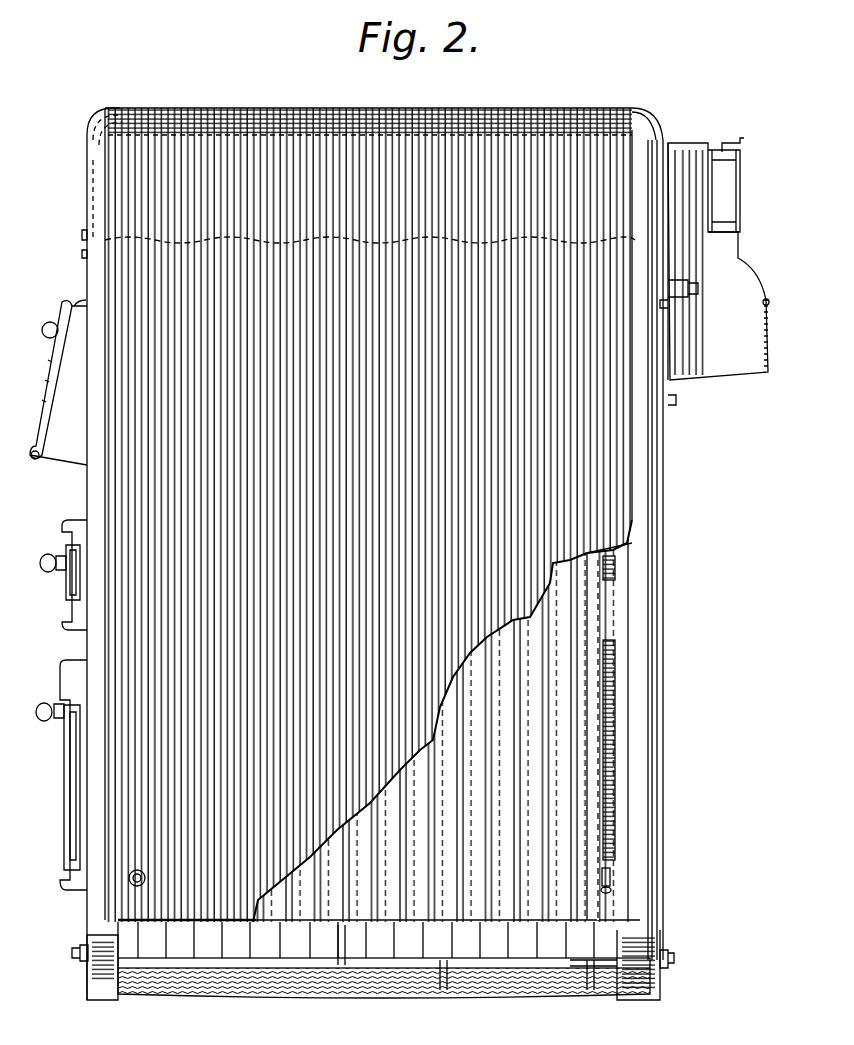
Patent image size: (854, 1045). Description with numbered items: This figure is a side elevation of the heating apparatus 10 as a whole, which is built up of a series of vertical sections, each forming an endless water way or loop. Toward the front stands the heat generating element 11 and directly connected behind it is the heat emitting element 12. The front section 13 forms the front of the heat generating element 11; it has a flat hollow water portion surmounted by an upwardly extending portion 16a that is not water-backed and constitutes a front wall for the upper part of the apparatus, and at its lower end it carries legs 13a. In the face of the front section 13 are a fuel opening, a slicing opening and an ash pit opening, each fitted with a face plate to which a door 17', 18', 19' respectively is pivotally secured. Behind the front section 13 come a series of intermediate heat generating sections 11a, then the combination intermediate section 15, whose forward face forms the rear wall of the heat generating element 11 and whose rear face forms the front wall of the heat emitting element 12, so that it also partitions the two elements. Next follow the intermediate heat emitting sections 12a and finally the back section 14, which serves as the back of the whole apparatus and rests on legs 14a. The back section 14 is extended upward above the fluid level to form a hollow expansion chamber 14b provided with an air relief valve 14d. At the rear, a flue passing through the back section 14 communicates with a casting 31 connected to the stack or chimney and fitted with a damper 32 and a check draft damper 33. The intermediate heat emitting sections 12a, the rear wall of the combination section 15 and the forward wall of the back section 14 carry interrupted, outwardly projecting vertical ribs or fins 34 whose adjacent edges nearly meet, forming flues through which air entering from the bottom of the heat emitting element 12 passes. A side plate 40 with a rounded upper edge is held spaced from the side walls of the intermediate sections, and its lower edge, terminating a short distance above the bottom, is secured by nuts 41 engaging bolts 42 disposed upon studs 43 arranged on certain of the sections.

The apparatus as a whole 10 is at (368, 102).
The heat generating element 11 is at (384, 981).
The intermediate heat generating sections 11a is at (182, 985).
The heat emitting element 12 is at (446, 777).
The intermediate heat emitting sections 12a is at (447, 990).
The front section 13 is at (86, 491).
The legs 13a is at (84, 978).
The back section 14 is at (662, 501).
The right foot 14a is at (655, 990).
The hollow chamber 14b is at (648, 128).
The air relief valve 14d is at (690, 292).
The combination intermediate section 15 is at (340, 992).
The upwardly extending portion 16a is at (84, 148).
The door 17' is at (46, 382).
The door 18' is at (53, 575).
The door 19' is at (52, 775).
The casting 31 is at (735, 262).
The damper 32 is at (735, 148).
The check draft damper 33 is at (768, 328).
The ribs or fins 34 is at (608, 585).
The side plates 40 is at (370, 515).
The nuts 41 is at (130, 884).
The bolts 42 is at (612, 880).
The studs 43 is at (608, 890).